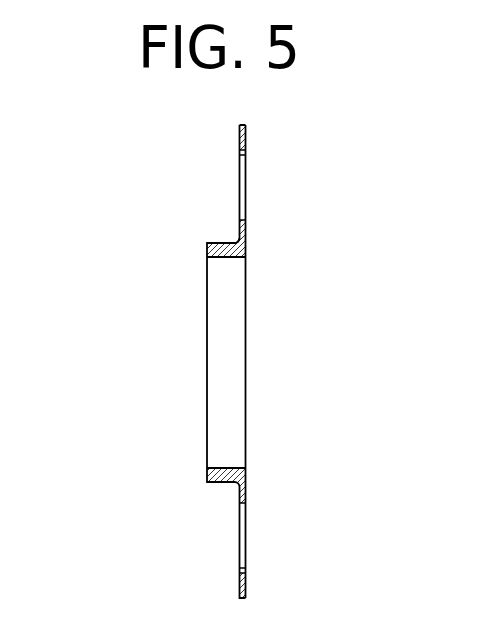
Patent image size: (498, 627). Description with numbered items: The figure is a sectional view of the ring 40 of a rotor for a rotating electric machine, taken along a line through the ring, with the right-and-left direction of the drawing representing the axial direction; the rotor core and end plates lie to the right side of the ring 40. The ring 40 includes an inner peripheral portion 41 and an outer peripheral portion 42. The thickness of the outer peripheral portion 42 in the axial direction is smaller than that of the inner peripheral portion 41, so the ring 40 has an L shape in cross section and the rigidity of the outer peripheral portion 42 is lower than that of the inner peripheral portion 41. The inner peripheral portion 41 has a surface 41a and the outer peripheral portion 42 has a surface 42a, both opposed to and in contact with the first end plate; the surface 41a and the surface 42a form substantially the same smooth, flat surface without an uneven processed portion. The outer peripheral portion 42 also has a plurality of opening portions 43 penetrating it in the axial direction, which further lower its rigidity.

The ring 40 is at (69, 138).
The inner peripheral portion 41 is at (207, 244).
The surface 41a is at (247, 249).
The outer peripheral portion 42 is at (239, 135).
The surface 42a is at (246, 136).
The opening portion 43 is at (242, 219).